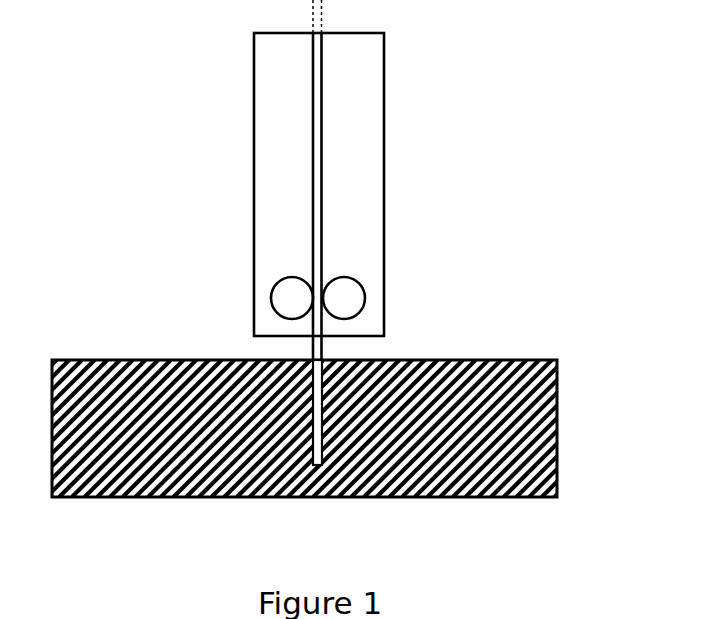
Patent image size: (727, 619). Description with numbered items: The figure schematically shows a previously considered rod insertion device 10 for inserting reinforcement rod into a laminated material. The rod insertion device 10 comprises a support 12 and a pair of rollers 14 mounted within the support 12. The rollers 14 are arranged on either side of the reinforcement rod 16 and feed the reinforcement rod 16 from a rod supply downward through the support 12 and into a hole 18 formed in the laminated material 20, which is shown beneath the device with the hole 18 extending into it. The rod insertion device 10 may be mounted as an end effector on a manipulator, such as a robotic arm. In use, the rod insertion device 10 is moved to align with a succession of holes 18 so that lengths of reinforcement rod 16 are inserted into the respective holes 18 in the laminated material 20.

The rod insertion device 10 is at (232, 168).
The support 12 is at (360, 237).
The pair of rollers 14 is at (343, 302).
The reinforcement rod 16 is at (317, 173).
The hole 18 is at (317, 387).
The laminated material 20 is at (535, 397).